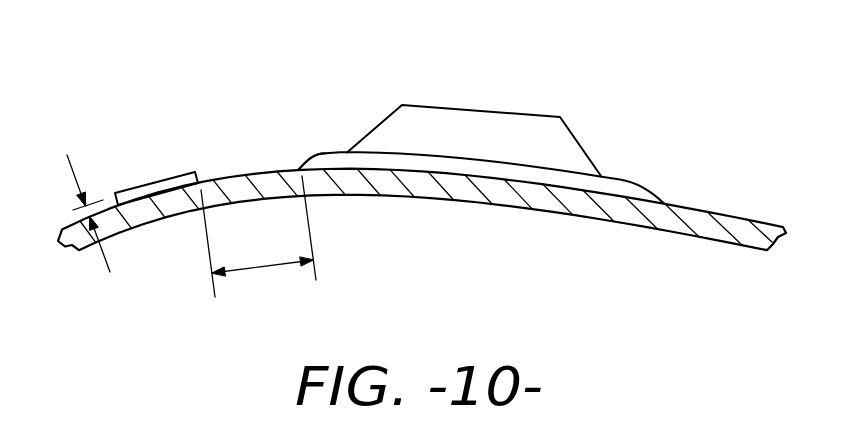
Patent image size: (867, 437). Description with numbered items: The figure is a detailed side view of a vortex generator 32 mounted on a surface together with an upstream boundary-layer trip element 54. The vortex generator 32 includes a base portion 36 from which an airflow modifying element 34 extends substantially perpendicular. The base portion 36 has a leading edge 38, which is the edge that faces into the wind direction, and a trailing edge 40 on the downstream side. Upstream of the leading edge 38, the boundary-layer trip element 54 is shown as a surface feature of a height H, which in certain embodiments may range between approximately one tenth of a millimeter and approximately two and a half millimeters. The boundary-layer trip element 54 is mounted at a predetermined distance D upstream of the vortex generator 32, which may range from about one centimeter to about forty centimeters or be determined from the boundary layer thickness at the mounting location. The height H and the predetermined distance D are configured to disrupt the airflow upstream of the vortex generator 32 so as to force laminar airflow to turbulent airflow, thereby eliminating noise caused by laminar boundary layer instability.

The vortex generator 32 is at (422, 135).
The airflow modifying element 34 is at (518, 113).
The base portion 36 is at (614, 176).
The leading edge 38 is at (318, 163).
The trailing edge 40 is at (658, 197).
The boundary-layer trip element 54 is at (150, 178).
The height H is at (104, 260).
The predetermined distance D is at (271, 266).